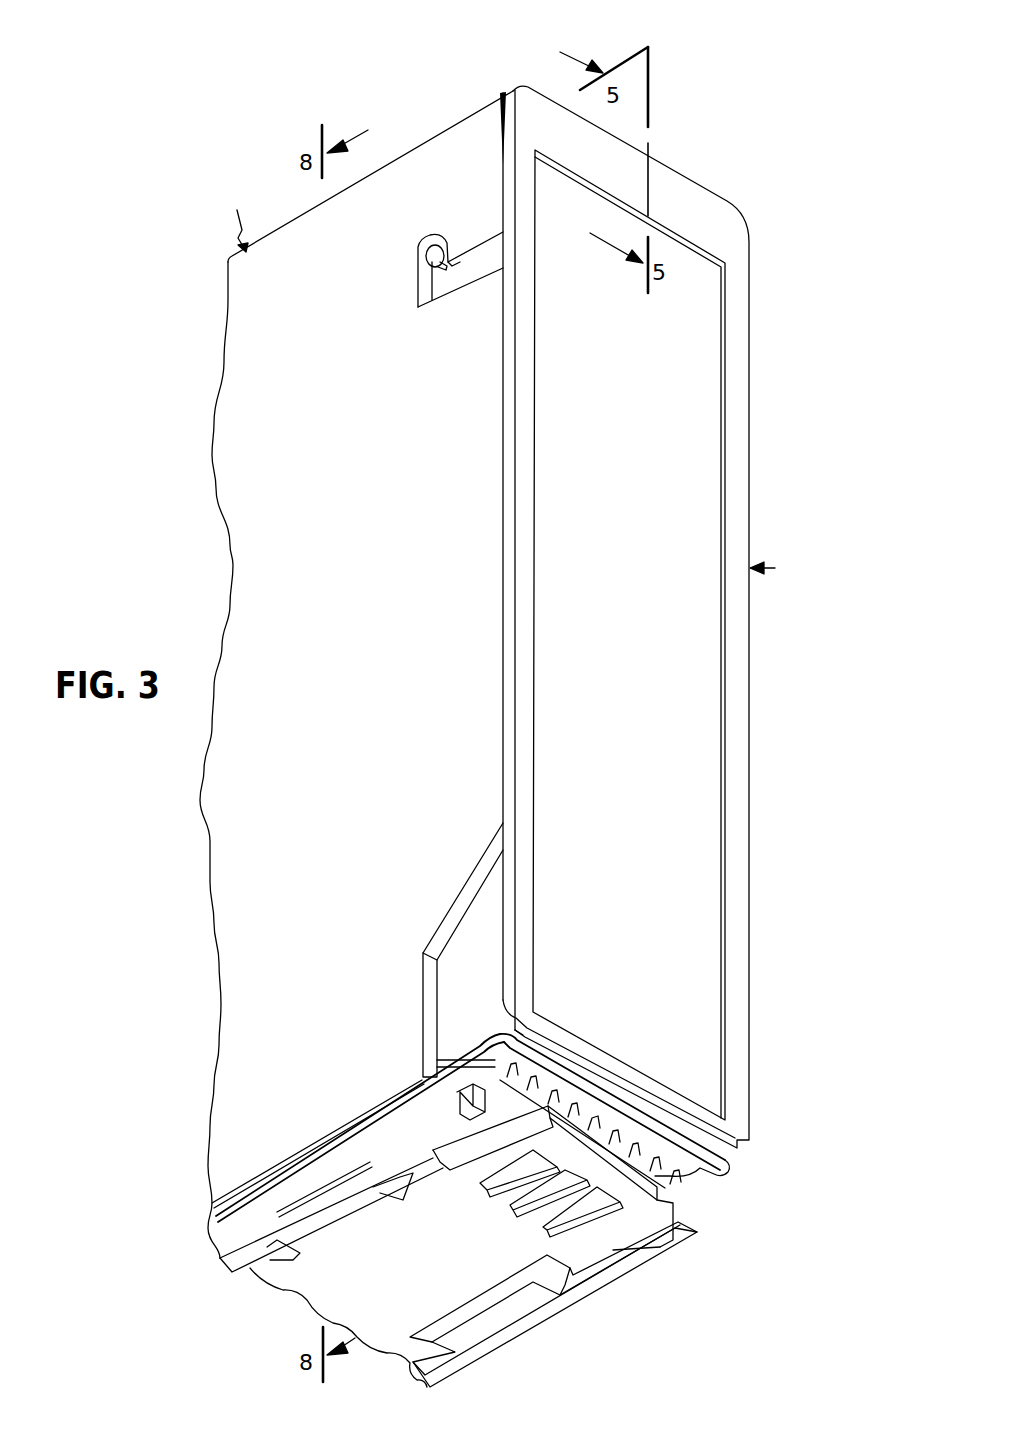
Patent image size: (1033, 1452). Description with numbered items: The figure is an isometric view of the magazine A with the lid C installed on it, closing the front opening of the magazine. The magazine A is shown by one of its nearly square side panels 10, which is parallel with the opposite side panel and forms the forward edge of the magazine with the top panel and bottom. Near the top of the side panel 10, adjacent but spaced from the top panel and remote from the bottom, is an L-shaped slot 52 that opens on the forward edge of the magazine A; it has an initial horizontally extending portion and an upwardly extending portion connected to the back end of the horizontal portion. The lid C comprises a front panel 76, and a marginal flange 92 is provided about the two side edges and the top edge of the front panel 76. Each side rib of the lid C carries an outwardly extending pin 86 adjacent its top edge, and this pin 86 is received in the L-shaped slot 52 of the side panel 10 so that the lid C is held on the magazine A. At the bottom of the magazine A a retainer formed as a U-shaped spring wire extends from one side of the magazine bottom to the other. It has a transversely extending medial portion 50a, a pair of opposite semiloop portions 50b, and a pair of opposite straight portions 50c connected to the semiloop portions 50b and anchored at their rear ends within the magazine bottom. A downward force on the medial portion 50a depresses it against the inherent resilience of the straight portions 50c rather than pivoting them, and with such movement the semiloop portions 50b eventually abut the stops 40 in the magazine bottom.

The side panel 10 is at (371, 579).
The front panel 76 is at (632, 581).
The marginal flange 92 is at (750, 823).
The pin 86 is at (430, 257).
The L-shaped slot 52 is at (457, 292).
The stop 40 is at (448, 1118).
The medial portion 50a is at (615, 1100).
The semiloop portion 50b is at (730, 1168).
The straight portion 50c is at (388, 1134).
The magazine A is at (238, 218).
The lid C is at (774, 571).